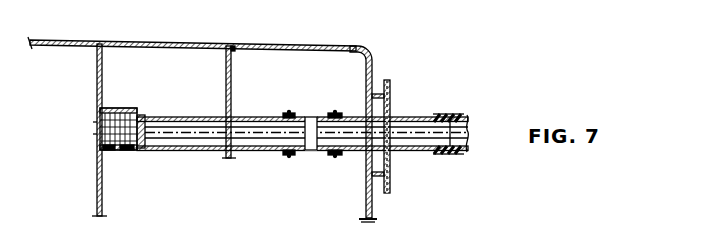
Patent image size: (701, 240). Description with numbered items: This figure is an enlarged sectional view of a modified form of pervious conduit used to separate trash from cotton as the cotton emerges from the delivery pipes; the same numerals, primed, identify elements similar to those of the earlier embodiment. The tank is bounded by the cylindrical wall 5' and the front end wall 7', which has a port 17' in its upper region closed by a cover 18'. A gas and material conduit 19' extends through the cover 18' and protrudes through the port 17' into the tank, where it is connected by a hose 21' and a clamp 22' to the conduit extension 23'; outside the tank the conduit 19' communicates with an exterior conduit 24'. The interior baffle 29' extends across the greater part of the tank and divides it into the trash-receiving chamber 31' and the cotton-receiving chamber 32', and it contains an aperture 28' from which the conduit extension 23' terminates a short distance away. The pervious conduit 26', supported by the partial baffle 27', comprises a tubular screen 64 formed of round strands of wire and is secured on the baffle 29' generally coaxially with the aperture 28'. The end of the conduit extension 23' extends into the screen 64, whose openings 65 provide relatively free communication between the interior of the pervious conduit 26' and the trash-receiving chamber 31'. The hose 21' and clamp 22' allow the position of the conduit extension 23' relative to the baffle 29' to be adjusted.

The cylindrical wall 5' is at (192, 29).
The interior baffle 29' is at (79, 130).
The partial baffle 27' is at (248, 102).
The front end wall 7' is at (376, 134).
The pervious conduit 26' is at (122, 109).
The aperture 28' is at (77, 130).
The tubular screen 64 is at (113, 152).
The openings 65 is at (128, 152).
The conduit extension 23' is at (302, 117).
The hose 21' is at (301, 118).
The clamp 22' is at (341, 118).
The cover 18' is at (404, 136).
The port 17' is at (405, 85).
The gas and material conduit 19' is at (410, 168).
The exterior conduit 24' is at (459, 118).
The cotton-receiving chamber 32' is at (43, 183).
The trash-receiving chamber 31' is at (223, 215).